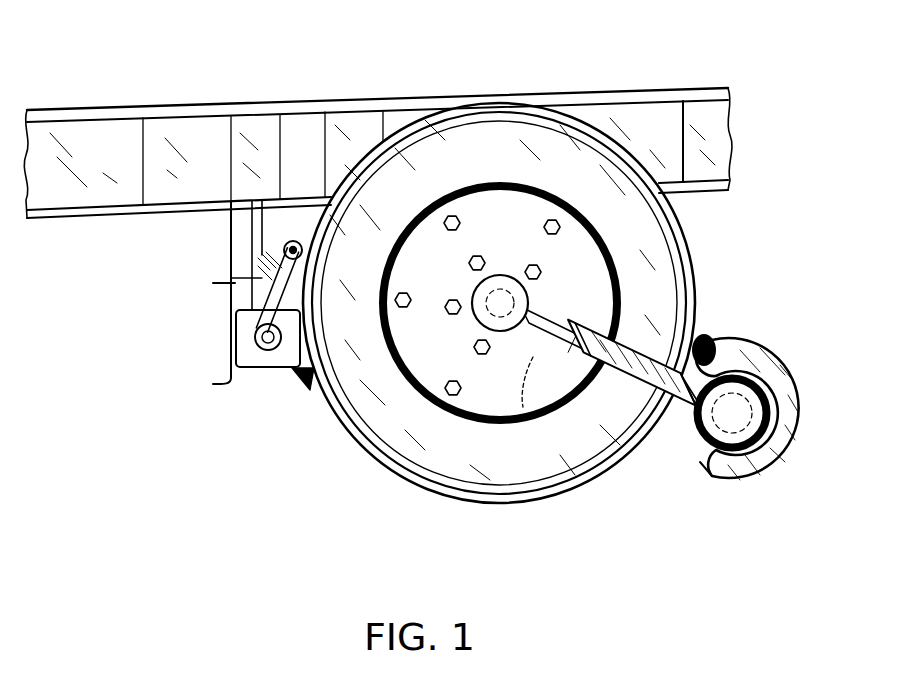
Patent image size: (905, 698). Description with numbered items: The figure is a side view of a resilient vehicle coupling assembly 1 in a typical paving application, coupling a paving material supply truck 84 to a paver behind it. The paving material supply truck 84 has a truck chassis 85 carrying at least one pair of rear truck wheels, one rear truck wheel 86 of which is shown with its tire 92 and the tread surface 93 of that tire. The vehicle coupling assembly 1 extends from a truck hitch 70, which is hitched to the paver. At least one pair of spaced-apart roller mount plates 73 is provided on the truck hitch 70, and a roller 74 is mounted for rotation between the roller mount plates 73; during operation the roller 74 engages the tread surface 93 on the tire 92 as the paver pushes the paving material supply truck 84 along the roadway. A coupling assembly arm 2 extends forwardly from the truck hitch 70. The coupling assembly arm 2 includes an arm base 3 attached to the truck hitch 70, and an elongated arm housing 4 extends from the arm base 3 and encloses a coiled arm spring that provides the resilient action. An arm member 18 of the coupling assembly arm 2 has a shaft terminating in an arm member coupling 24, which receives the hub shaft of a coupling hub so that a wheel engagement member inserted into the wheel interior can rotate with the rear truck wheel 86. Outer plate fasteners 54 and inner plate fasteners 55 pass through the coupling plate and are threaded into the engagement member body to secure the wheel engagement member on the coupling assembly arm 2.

The vehicle coupling assembly 1 is at (739, 272).
The coupling assembly arm 2 is at (637, 337).
The arm base 3 is at (783, 440).
The arm housing 4 is at (673, 425).
The arm member 18 is at (535, 413).
The arm member coupling 24 is at (500, 300).
The outer plate fasteners 54 is at (450, 380).
The inner plate fasteners 55 is at (455, 298).
The truck hitch 70 is at (793, 367).
The roller mount plates 73 is at (777, 398).
The roller 74 is at (707, 333).
The paving material supply truck 84 is at (662, 81).
The truck chassis 85 is at (620, 102).
The rear truck wheel 86 is at (495, 432).
The tire 92 is at (388, 425).
The tread surface 93 is at (535, 505).